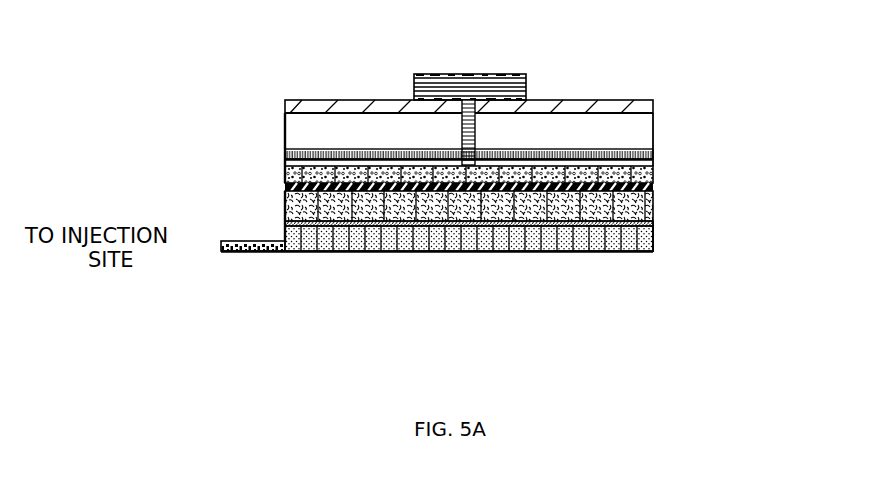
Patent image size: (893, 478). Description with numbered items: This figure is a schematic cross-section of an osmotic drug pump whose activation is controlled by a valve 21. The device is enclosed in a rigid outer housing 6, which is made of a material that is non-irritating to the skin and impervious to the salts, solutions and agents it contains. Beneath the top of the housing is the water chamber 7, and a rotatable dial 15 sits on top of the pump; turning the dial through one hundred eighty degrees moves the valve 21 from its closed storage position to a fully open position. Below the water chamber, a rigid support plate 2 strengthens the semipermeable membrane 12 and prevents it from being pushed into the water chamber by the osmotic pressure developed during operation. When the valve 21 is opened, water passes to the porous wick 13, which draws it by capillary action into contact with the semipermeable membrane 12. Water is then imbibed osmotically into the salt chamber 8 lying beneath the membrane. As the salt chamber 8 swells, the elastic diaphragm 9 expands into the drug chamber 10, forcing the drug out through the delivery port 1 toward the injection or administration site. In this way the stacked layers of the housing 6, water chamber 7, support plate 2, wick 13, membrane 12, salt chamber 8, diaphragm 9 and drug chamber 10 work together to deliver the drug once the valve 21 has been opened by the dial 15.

The delivery port 1 is at (246, 254).
The rigid support plate 2 is at (656, 153).
The outer housing 6 is at (566, 100).
The water chamber 7 is at (333, 135).
The salt chamber 8 is at (282, 204).
The elastic diaphragm 9 is at (657, 227).
The drug chamber 10 is at (456, 255).
The semipermeable membrane 12 is at (657, 188).
The porous wick 13 is at (282, 170).
The rotatable dial 15 is at (470, 73).
The valve 21 is at (413, 93).